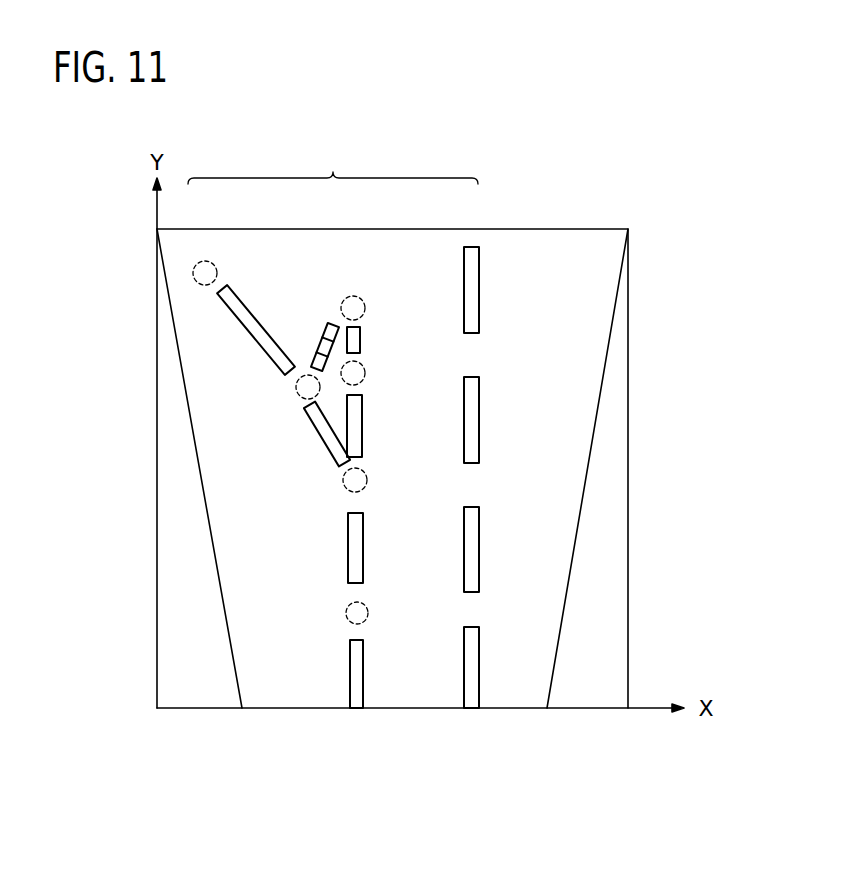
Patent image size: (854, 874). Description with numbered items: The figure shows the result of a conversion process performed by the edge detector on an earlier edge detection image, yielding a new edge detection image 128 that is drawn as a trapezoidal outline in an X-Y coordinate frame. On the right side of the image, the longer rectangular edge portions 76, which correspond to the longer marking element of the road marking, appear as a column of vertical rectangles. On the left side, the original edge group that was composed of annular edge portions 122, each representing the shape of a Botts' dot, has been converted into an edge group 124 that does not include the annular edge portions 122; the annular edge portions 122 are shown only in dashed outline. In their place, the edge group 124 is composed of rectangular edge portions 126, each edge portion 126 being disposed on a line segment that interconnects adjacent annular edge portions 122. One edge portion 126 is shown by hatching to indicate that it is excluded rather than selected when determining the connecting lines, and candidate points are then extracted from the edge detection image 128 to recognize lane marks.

The edge portions 76 is at (473, 710).
The annular edge portions 122 is at (217, 270).
The edge group 124 is at (333, 165).
The rectangular edge portions 126 is at (262, 334).
The edge detection image 128 is at (584, 229).